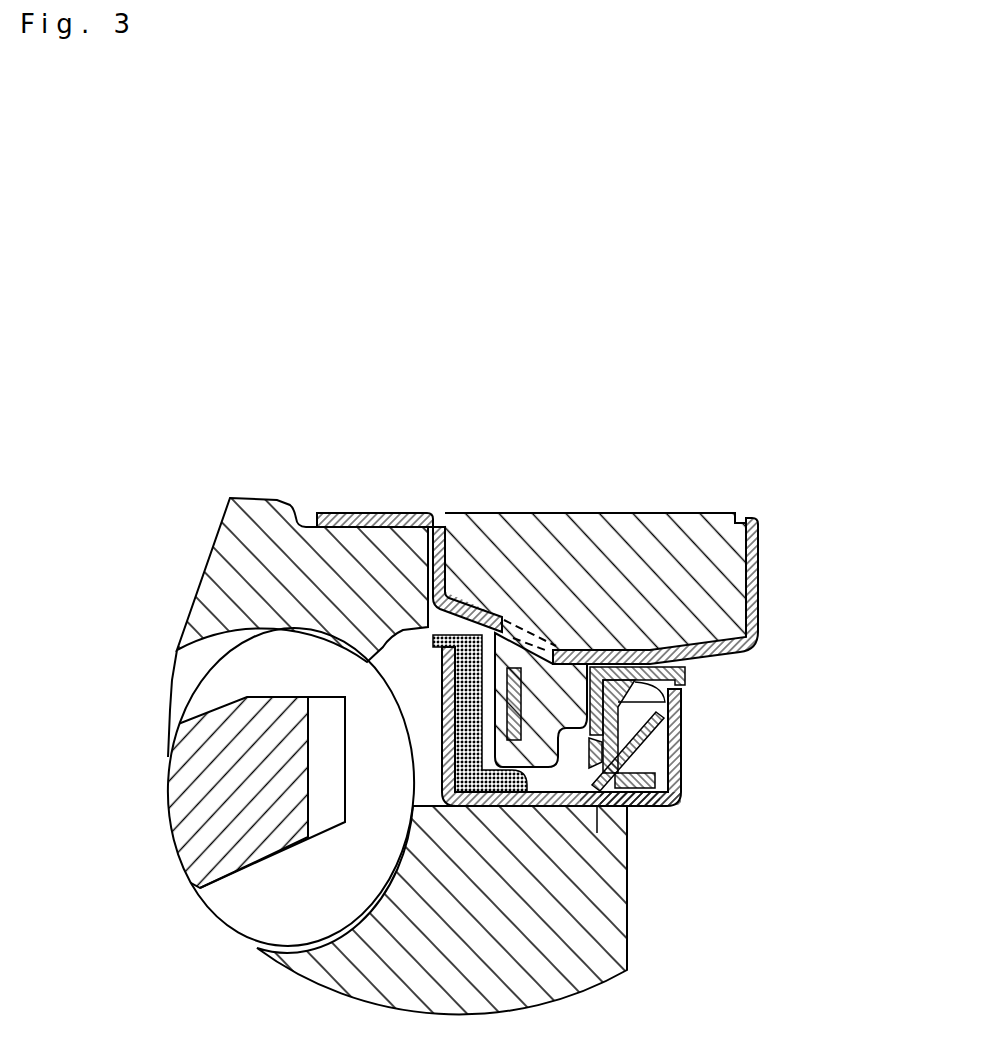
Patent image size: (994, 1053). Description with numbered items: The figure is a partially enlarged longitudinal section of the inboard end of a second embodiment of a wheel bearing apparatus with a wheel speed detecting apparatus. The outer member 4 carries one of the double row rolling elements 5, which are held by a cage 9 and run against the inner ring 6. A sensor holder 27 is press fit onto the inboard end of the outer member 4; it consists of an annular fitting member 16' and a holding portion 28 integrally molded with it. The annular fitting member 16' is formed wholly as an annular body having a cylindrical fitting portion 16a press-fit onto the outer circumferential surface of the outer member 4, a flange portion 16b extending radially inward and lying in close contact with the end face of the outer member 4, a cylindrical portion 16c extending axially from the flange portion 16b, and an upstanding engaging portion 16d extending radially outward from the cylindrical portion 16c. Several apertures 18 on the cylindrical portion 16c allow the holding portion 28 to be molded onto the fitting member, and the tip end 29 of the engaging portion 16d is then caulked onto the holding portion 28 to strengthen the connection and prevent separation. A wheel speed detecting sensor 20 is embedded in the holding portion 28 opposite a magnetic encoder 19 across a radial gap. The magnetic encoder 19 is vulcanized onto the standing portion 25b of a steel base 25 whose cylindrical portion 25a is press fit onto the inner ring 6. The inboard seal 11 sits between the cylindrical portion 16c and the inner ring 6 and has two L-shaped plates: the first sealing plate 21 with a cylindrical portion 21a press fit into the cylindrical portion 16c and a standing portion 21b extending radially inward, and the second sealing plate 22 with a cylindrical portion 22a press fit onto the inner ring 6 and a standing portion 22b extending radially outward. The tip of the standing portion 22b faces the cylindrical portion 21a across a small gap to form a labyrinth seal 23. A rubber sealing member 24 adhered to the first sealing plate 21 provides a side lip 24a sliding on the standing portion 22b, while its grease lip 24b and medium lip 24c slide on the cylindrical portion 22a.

The outer member 4 is at (230, 572).
The rolling elements 5 is at (203, 675).
The inner ring 6 is at (313, 970).
The cage 9 is at (220, 848).
The inboard seal 11 is at (829, 671).
The annular fitting member 16' is at (569, 521).
The cylindrical fitting portion 16a is at (393, 513).
The flange portion 16b is at (441, 560).
The cylindrical portion 16c is at (577, 643).
The upstanding engaging portion 16d is at (585, 655).
The apertures 18 is at (495, 658).
The magnetic encoder 19 is at (470, 732).
The wheel speed detecting sensor 20 is at (507, 697).
The first annular sealing plate 21 is at (720, 715).
The cylindrical portion 21a is at (687, 697).
The standing portion 21b is at (683, 705).
The second annular sealing plate 22 is at (718, 770).
The cylindrical portion 22a is at (638, 804).
The standing portion 22b is at (682, 728).
The labyrinth seal 23 is at (757, 610).
The sealing member 24 is at (612, 815).
The side lip 24a is at (603, 818).
The grease lip 24b is at (597, 812).
The medium lip 24c is at (603, 826).
The steel base 25 is at (462, 846).
The cylindrical portion 25a is at (445, 866).
The standing portion 25b is at (425, 815).
The sensor holder 27 is at (632, 520).
The holding portion 28 is at (680, 545).
The tip end 29 is at (750, 520).